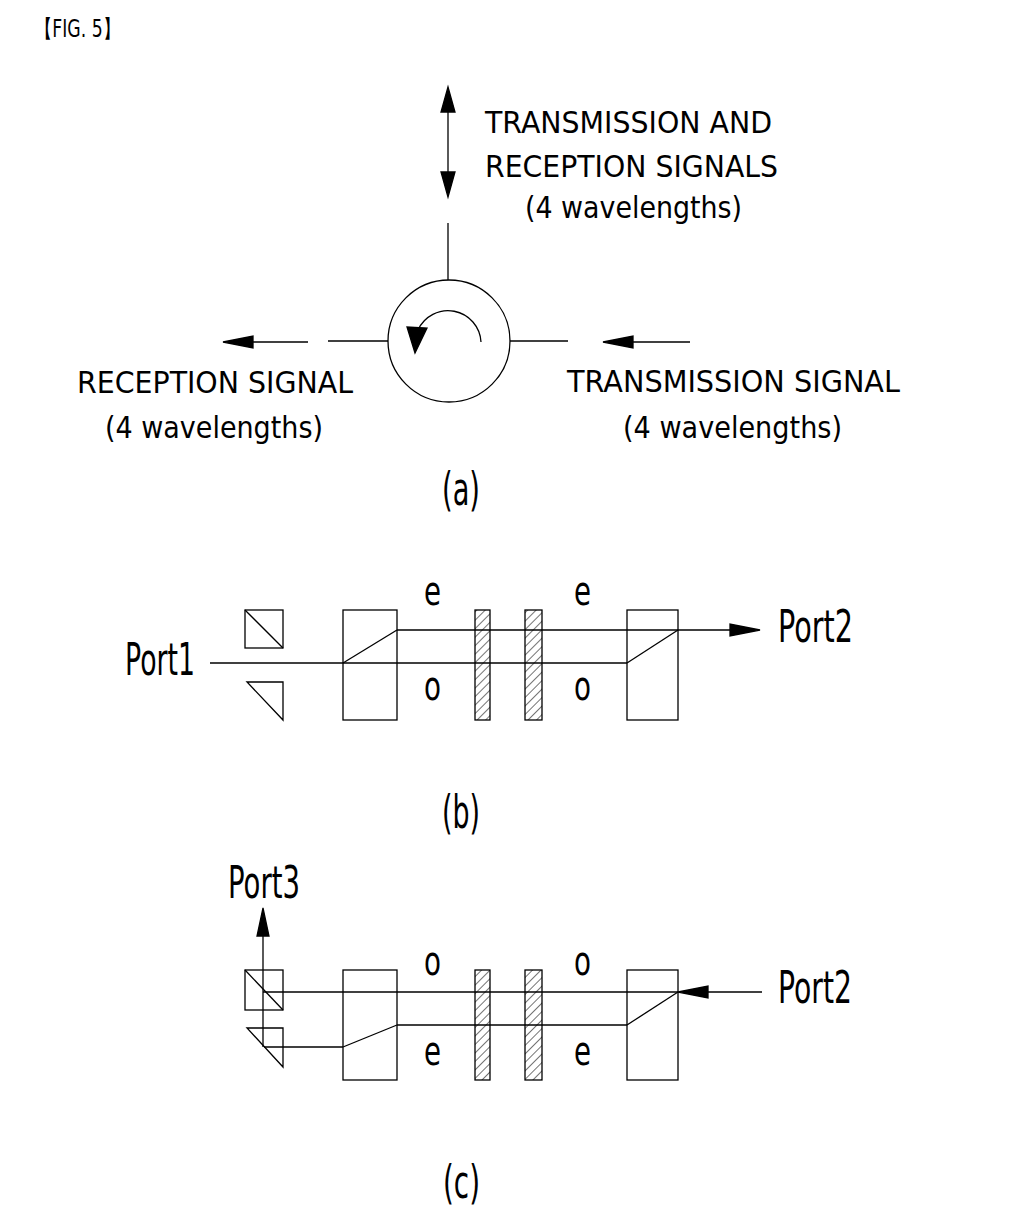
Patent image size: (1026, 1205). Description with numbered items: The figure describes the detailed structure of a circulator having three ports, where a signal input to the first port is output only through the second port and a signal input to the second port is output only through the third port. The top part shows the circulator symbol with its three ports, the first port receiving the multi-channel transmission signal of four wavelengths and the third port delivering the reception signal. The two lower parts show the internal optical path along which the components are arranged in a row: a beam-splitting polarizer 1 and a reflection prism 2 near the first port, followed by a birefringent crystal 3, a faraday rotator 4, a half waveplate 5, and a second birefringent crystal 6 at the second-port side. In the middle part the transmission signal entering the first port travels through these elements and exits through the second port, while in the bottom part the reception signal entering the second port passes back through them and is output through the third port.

The beam-splitting polarizer 1 is at (391, 652).
The reflection prism 2 is at (362, 680).
The birefringent crystal 3 is at (362, 713).
The faraday rotator 4 is at (482, 873).
The half waveplate 5 is at (533, 873).
The birefringent crystal 6 is at (652, 873).